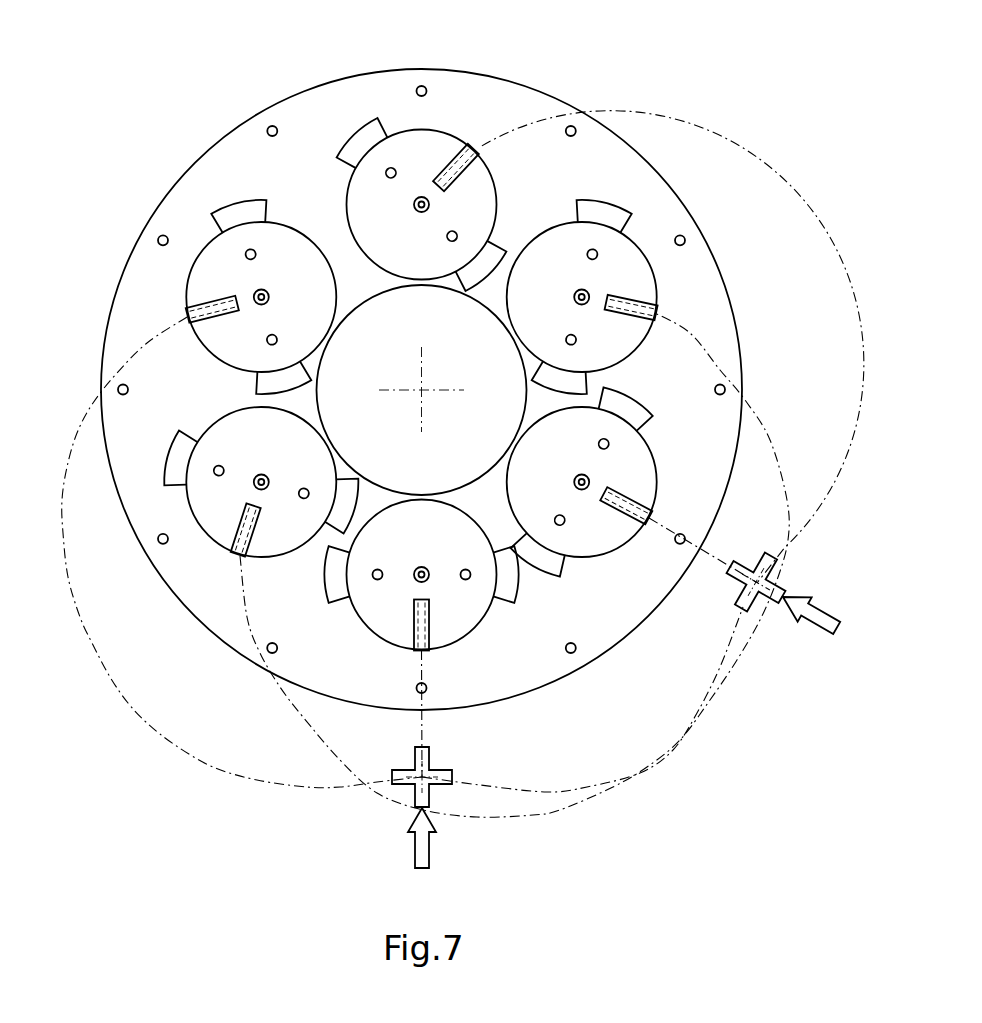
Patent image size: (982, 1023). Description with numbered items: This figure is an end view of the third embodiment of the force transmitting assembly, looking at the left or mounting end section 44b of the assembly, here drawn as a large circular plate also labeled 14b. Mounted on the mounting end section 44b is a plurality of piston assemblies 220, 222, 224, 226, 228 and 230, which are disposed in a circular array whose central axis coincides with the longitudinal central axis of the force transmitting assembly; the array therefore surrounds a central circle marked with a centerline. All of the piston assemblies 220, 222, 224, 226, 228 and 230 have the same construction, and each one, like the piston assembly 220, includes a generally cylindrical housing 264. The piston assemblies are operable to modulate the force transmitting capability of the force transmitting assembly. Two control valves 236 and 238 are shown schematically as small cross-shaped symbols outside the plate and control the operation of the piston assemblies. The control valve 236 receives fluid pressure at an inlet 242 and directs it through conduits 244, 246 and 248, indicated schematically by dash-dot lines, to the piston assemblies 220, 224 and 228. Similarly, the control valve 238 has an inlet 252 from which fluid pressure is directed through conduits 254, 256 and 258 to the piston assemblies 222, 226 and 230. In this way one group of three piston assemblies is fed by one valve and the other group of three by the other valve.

The mounting plate 14b is at (421, 361).
The mounting end section 44b is at (601, 622).
The piston assembly 220 is at (437, 164).
The piston assembly 222 is at (660, 266).
The piston assembly 224 is at (620, 558).
The piston assembly 226 is at (381, 652).
The piston assembly 228 is at (205, 548).
The piston assembly 230 is at (178, 276).
The housing 264 is at (486, 169).
The control valve 236 is at (779, 572).
The control valve 238 is at (432, 784).
The inlet 242 is at (763, 606).
The inlet 252 is at (410, 790).
The conduit 244 is at (860, 338).
The conduit 246 is at (718, 552).
The conduit 248 is at (560, 812).
The conduit 254 is at (498, 786).
The conduit 256 is at (422, 733).
The conduit 258 is at (148, 718).